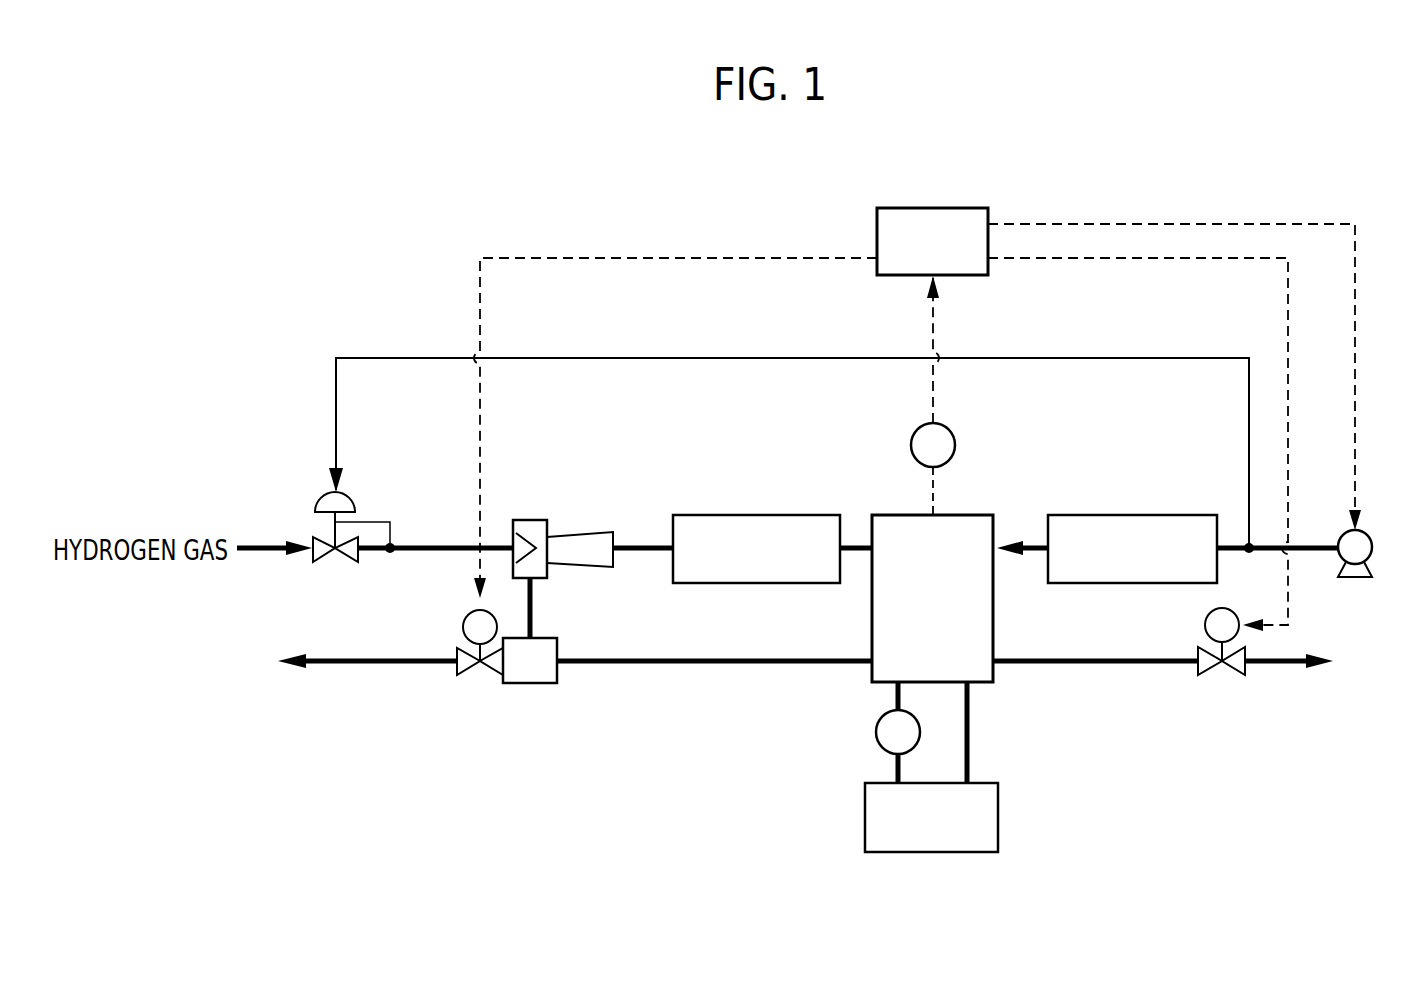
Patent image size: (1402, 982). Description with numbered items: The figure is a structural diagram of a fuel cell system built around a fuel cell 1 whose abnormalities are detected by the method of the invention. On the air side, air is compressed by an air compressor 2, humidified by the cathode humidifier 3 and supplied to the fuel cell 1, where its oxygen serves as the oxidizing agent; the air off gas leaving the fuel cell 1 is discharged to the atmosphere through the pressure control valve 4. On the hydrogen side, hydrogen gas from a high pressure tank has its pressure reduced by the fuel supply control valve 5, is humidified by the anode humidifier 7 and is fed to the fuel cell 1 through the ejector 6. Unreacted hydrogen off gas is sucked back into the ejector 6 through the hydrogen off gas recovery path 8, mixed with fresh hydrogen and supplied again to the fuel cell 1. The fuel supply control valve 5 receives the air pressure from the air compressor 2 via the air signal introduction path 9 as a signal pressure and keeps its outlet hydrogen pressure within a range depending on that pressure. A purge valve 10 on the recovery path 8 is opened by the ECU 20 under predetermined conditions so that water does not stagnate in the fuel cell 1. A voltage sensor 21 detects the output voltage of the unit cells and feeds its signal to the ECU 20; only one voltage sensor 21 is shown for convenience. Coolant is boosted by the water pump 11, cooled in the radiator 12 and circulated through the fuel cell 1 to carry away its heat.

The fuel cell 1 is at (976, 515).
The air compressor 2 is at (1372, 540).
The cathode humidifier 3 is at (1138, 515).
The pressure control valve 4 is at (1226, 670).
The fuel supply control valve 5 is at (341, 560).
The ejector 6 is at (528, 520).
The anode humidifier 7 is at (790, 515).
The hydrogen off gas recovery path 8 is at (640, 664).
The air signal introduction path 9 is at (1107, 358).
The purge valve 10 is at (458, 670).
The water pump 11 is at (876, 735).
The radiator 12 is at (865, 821).
The ECU 20 is at (936, 208).
The voltage sensor 21 is at (948, 430).